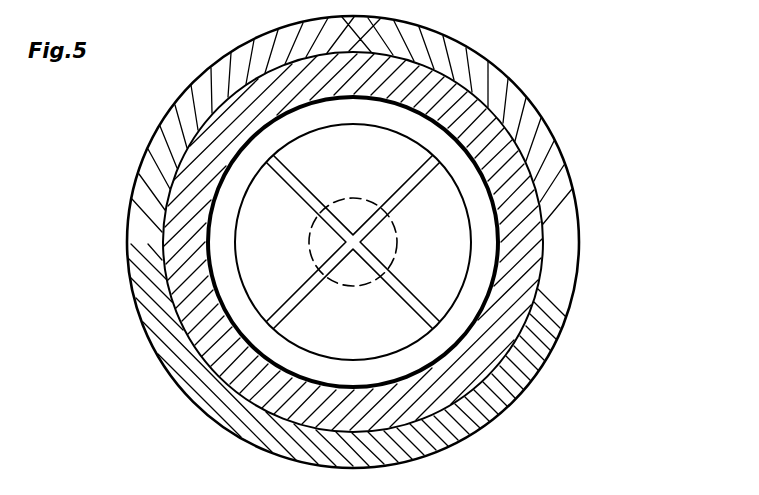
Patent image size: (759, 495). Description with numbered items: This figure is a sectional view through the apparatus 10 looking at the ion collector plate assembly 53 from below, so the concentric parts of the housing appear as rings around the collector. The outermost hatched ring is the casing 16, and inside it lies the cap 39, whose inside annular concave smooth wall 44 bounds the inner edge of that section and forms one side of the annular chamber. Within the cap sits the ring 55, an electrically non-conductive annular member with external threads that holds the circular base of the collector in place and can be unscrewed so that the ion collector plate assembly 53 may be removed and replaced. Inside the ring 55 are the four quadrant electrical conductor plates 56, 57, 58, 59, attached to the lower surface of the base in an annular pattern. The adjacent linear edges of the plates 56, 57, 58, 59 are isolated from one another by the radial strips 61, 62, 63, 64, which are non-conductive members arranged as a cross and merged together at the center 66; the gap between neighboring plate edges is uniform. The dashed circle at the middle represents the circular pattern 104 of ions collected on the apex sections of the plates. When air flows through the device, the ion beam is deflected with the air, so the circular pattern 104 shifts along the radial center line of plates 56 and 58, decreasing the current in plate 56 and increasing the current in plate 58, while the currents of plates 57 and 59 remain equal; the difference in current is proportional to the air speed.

The apparatus 10 is at (616, 201).
The casing 16 is at (518, 114).
The cap 39 is at (510, 173).
The inside annular concave smooth wall 44 is at (494, 241).
The ion collector plate assembly 53 is at (390, 134).
The ring 55 is at (470, 291).
The quadrant conductor plate 56 is at (280, 241).
The quadrant conductor plate 57 is at (334, 160).
The quadrant conductor plate 58 is at (444, 253).
The quadrant conductor plate 59 is at (374, 331).
The radial strip 61 is at (272, 156).
The radial strip 62 is at (428, 170).
The radial strip 63 is at (436, 328).
The radial strip 64 is at (298, 293).
The center 66 is at (352, 247).
The circular pattern of ions 104 is at (348, 197).